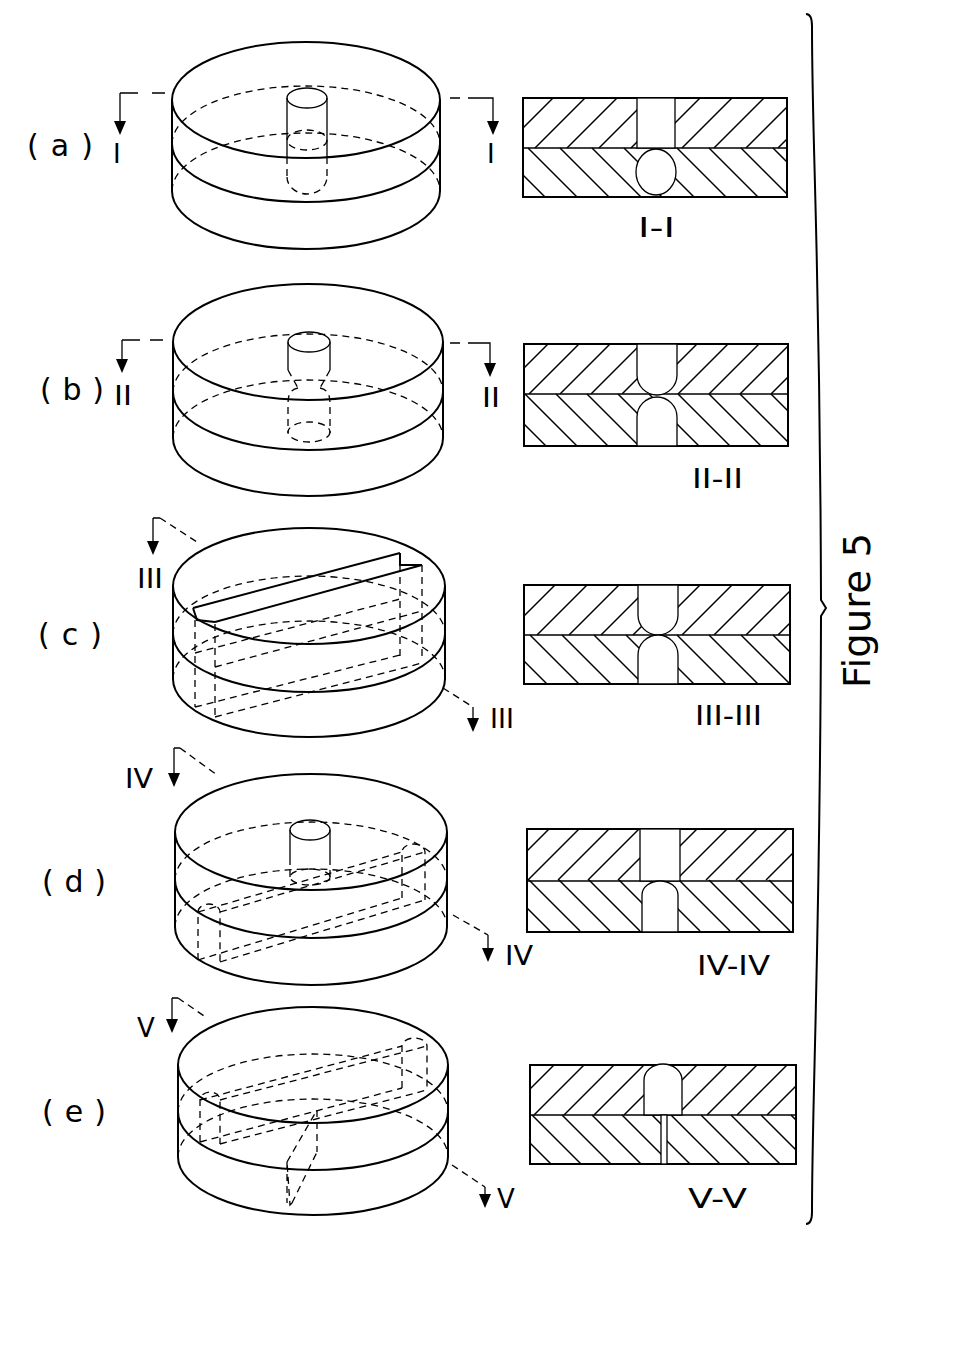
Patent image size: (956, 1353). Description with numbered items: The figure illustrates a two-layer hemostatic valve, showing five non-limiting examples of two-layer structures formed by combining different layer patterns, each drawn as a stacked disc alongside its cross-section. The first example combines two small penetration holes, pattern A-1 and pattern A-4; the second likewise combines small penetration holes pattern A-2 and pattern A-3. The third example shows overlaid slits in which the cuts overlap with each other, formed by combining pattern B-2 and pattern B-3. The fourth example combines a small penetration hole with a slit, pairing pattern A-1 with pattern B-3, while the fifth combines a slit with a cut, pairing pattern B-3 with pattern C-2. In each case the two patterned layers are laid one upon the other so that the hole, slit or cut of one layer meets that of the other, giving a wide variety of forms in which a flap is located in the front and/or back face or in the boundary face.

The pattern A-1 is at (608, 108).
The pattern A-4 is at (598, 195).
The pattern A-2 is at (587, 348).
The pattern A-3 is at (615, 442).
The pattern B-2 is at (592, 593).
The pattern B-3 is at (613, 680).
The pattern C-2 is at (648, 1158).